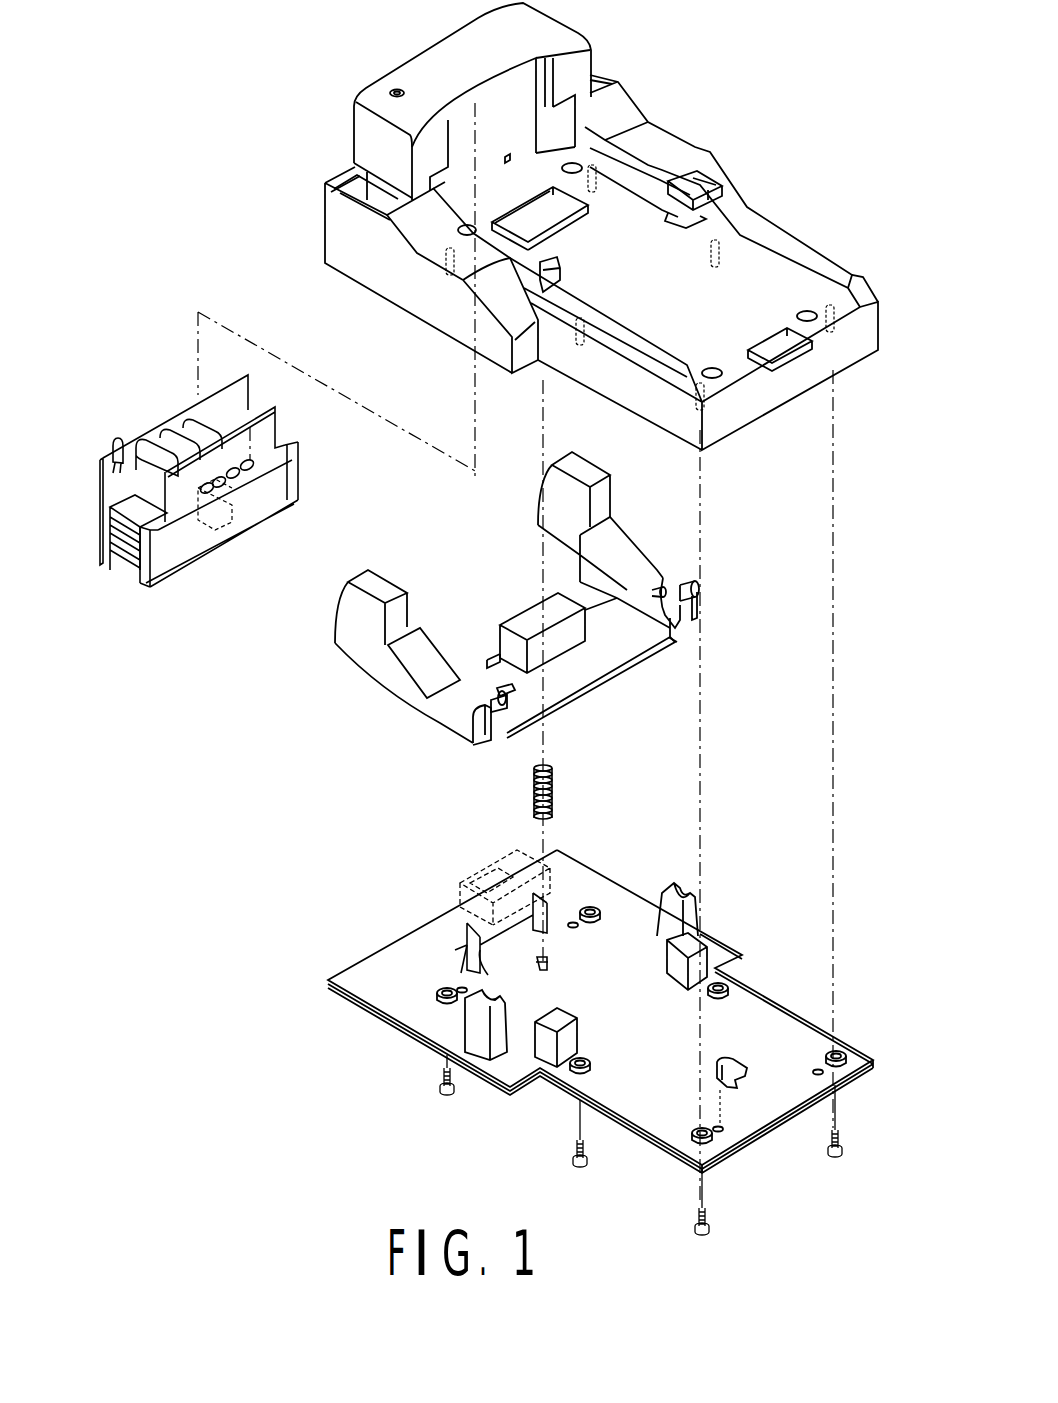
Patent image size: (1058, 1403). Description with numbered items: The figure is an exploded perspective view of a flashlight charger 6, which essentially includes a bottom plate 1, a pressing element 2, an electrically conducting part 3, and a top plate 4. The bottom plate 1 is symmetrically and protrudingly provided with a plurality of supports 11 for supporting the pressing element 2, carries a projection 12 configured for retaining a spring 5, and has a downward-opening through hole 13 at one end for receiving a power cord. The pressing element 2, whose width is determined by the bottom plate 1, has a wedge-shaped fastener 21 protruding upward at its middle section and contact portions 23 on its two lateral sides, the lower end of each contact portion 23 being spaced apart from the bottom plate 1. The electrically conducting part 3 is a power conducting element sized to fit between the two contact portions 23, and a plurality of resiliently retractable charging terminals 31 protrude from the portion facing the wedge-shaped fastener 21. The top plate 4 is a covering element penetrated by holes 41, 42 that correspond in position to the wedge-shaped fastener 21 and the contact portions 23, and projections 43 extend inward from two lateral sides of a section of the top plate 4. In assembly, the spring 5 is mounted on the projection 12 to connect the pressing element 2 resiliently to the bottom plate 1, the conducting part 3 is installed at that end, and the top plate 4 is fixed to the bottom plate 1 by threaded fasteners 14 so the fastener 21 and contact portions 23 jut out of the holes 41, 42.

The bottom plate 1 is at (387, 992).
The pressing element 2 is at (613, 647).
The electrically conducting part 3 is at (110, 495).
The top plate 4 is at (807, 240).
The spring 5 is at (560, 788).
The flashlight charger 6 is at (278, 790).
The supports 11 is at (480, 1022).
The projection 12 is at (545, 960).
The through hole 13 is at (513, 875).
The threaded fasteners 14 is at (695, 1215).
The wedge-shaped fastener 21 is at (525, 628).
The contact portions 23 is at (603, 500).
The charging terminals 31 is at (245, 470).
The hole 41 is at (598, 183).
The holes 42 is at (598, 78).
The projections 43 is at (690, 188).